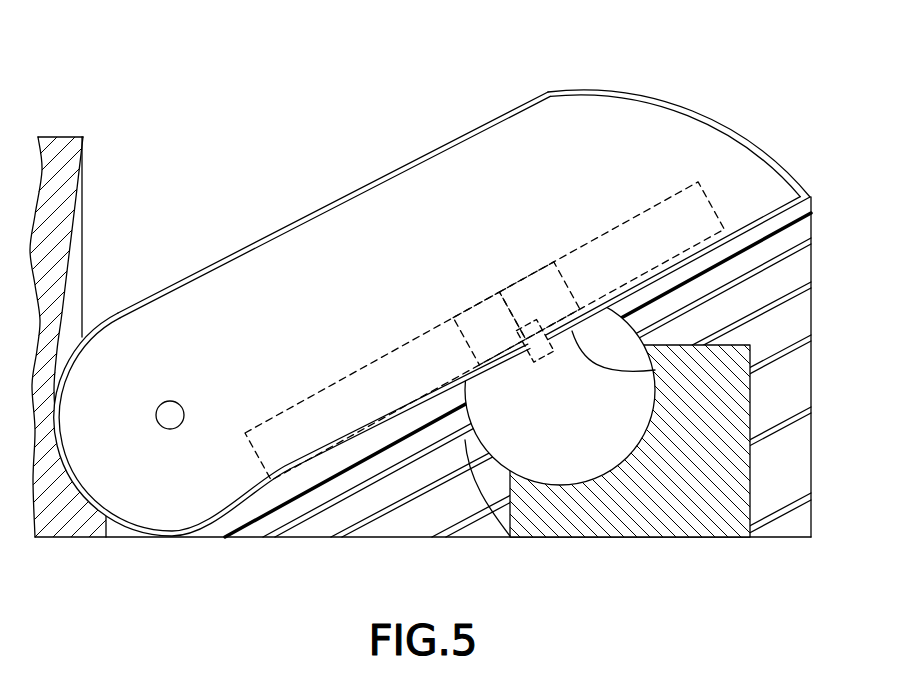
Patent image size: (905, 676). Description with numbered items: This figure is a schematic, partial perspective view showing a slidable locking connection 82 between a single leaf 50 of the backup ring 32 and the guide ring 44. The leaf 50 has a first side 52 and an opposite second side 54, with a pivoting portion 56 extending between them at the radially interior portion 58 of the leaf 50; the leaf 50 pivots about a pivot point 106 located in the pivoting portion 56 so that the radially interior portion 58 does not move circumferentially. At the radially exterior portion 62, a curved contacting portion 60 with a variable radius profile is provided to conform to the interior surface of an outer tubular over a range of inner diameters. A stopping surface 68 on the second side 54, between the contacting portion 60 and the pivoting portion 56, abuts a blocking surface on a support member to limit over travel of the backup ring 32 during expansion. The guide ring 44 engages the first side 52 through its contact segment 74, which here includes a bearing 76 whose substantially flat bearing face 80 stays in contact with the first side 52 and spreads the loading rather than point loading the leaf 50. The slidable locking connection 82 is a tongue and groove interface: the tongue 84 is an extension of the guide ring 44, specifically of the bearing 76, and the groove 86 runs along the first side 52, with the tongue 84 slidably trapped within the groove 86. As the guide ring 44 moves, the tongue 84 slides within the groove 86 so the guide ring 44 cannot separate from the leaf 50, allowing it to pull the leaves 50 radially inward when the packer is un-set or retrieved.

The backup ring 32 is at (365, 240).
The guide ring 44 is at (670, 503).
The leaf 50 is at (295, 270).
The first side 52 is at (400, 437).
The second side 54 is at (237, 265).
The pivoting portion 56 is at (183, 463).
The radially interior portion 58 is at (110, 487).
The contacting portion 60 is at (660, 97).
The radially exterior portion 62 is at (760, 150).
The stopping surface 68 is at (448, 147).
The contact segment 74 is at (572, 410).
The bearing 76 is at (555, 452).
The bearing face 80 is at (652, 371).
The slidable locking connection 82 is at (533, 282).
The tongue 84 is at (497, 297).
The groove 86 is at (610, 238).
The pivot point 106 is at (170, 412).